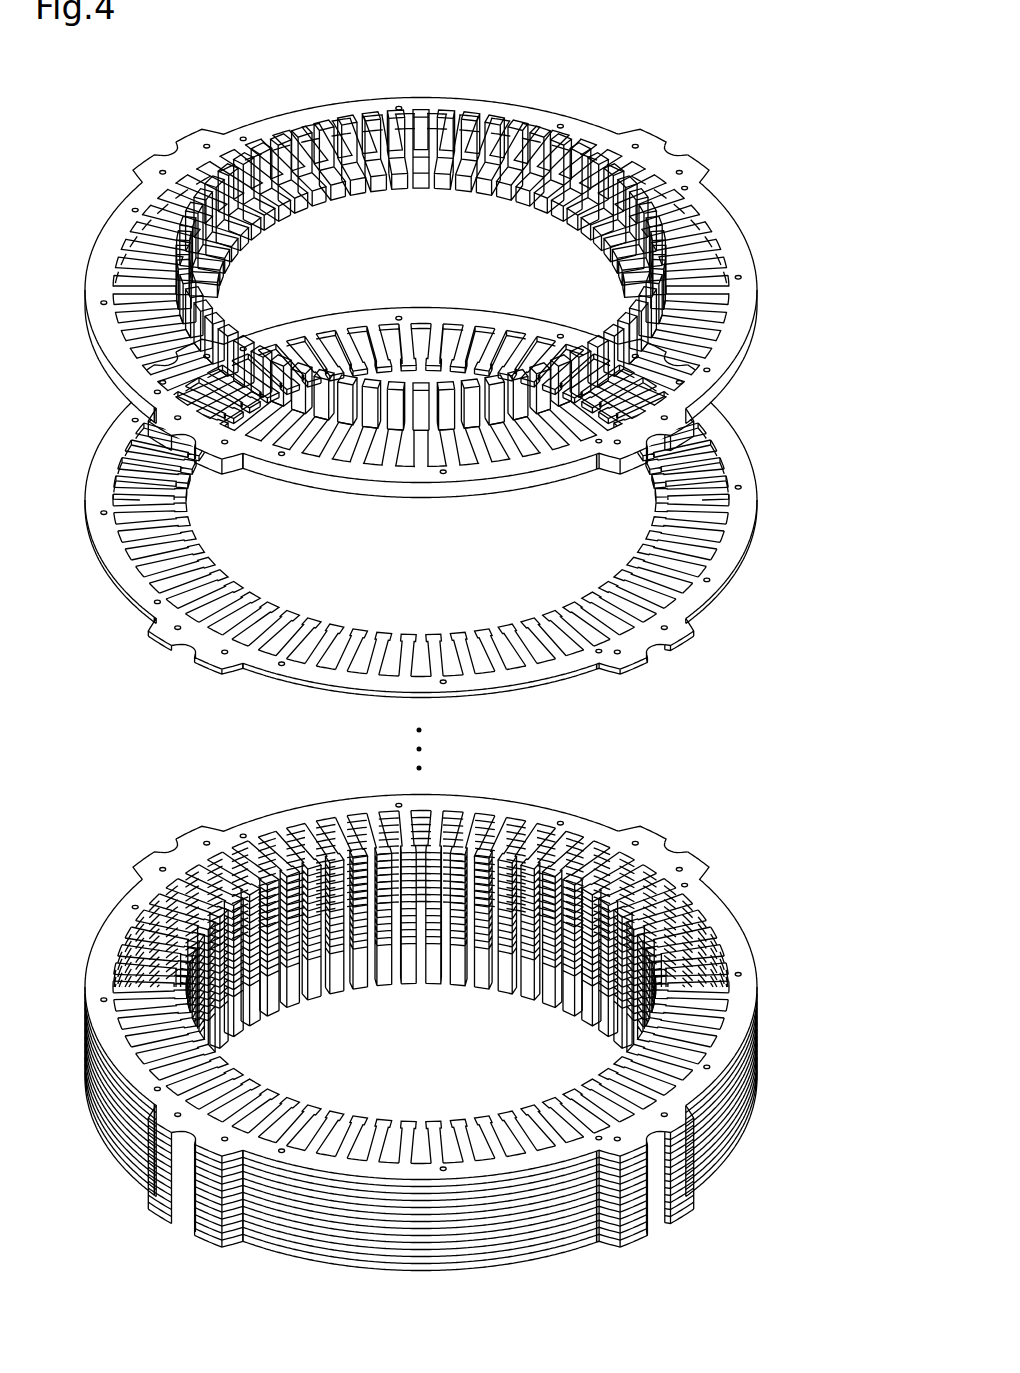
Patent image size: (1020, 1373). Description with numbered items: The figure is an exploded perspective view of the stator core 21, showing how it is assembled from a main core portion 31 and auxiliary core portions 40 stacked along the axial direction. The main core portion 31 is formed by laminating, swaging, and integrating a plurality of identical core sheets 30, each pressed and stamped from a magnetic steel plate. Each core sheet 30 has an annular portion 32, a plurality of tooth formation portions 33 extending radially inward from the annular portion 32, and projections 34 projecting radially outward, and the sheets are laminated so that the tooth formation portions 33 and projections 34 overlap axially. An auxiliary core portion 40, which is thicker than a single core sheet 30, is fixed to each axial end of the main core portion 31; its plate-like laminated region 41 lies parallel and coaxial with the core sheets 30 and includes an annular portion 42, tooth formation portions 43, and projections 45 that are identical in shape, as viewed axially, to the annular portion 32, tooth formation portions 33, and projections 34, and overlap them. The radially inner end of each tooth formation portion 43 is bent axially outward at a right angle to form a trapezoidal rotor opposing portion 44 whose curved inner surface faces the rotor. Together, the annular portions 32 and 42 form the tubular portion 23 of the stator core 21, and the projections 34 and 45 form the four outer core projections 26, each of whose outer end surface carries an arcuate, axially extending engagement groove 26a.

The stator core 21 is at (429, 271).
The tubular portion 23 is at (421, 1076).
The outer core projection 26 is at (362, 1175).
The engagement groove 26a is at (434, 687).
The core sheet 30 is at (442, 743).
The main core portion 31 is at (467, 500).
The annular portion 32 is at (421, 821).
The tooth formation portion 33 is at (421, 744).
The projection 34 is at (397, 772).
The auxiliary core portion 40 is at (438, 709).
The laminated region 41 is at (421, 263).
The annular portion 42 is at (398, 716).
The tooth formation portion 43 is at (400, 290).
The rotor opposing portion 44 is at (421, 556).
The projection 45 is at (413, 688).